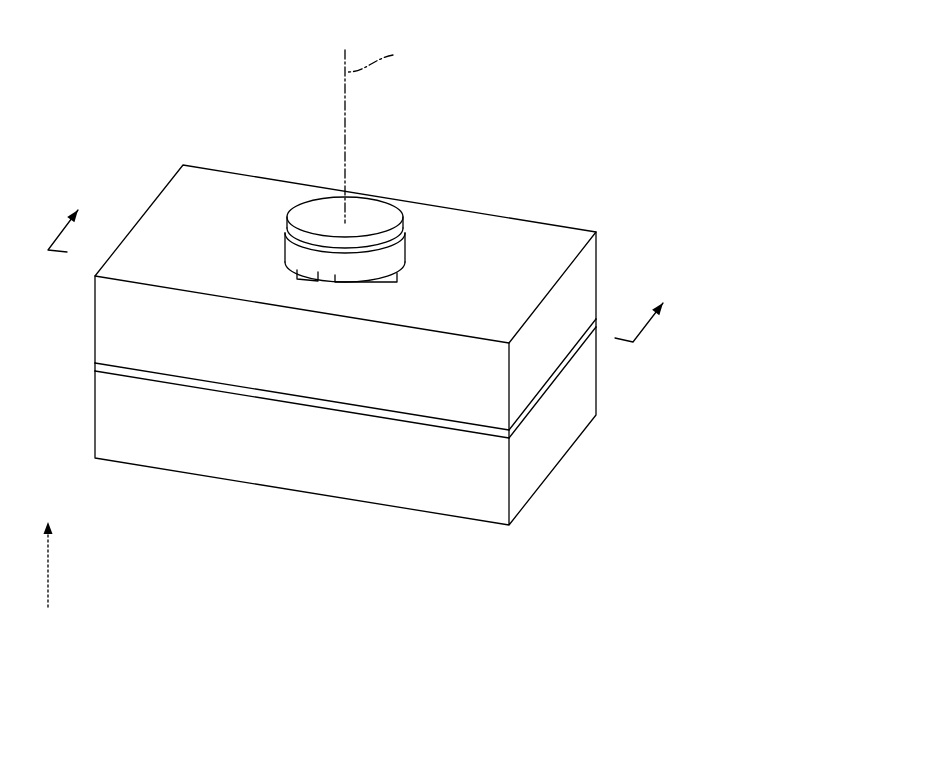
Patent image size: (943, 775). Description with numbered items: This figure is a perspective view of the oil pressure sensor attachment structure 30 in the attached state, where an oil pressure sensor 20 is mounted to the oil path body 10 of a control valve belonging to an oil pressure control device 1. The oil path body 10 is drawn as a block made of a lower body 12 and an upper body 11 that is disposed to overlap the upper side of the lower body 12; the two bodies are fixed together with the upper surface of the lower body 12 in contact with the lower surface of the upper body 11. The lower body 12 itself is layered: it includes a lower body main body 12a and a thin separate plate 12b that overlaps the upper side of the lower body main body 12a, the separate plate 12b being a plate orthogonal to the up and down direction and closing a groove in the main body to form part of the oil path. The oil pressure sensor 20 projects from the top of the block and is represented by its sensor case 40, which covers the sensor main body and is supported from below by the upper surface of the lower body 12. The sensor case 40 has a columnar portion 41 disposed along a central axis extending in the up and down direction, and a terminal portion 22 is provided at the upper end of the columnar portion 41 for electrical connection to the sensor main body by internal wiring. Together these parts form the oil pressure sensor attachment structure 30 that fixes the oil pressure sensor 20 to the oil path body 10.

The oil pressure control device 1 is at (583, 88).
The oil path body 10 is at (454, 363).
The upper body 11 is at (543, 355).
The lower body 12 is at (426, 440).
The lower body main body 12a is at (523, 463).
The separate plate 12b is at (537, 400).
The oil pressure sensor 20 is at (420, 176).
The terminal portion 22 is at (410, 233).
The oil pressure sensor attachment structure 30 is at (385, 171).
The sensor case 40 is at (385, 196).
The columnar portion 41 is at (395, 276).